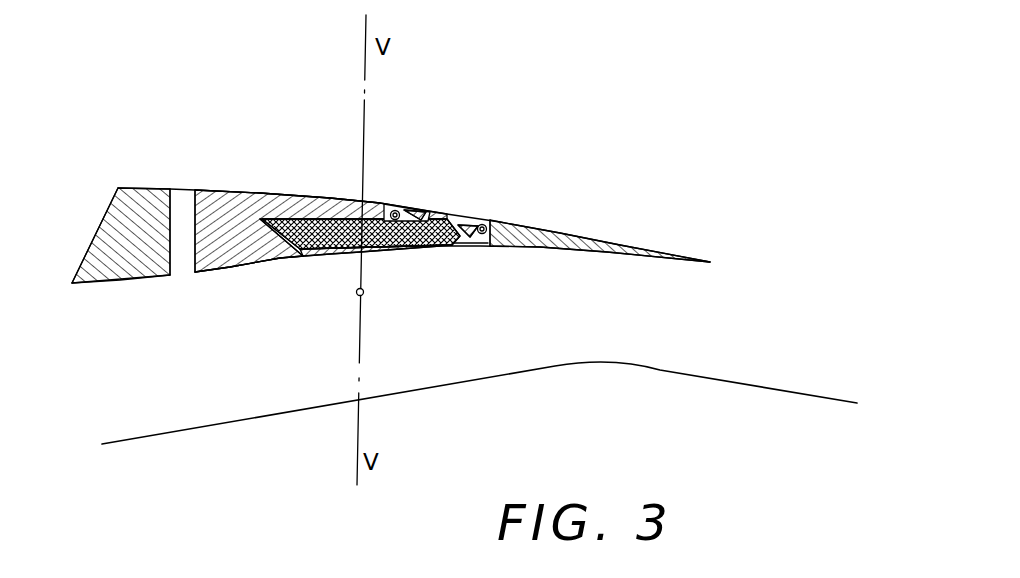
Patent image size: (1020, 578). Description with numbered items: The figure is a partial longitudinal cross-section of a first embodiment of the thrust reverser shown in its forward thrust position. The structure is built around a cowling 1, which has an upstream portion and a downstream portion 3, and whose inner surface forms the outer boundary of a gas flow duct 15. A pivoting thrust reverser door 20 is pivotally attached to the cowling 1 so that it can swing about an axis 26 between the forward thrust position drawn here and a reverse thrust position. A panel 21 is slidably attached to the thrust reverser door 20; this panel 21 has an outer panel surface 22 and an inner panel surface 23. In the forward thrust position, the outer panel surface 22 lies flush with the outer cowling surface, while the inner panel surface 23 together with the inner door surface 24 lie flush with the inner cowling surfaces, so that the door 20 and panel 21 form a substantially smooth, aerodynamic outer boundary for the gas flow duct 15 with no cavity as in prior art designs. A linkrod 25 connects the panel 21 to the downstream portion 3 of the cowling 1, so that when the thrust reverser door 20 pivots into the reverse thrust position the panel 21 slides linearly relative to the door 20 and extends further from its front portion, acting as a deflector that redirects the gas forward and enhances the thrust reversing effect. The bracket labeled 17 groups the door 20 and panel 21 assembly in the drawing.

The cowling 1 is at (118, 228).
The downstream portion 3 is at (561, 245).
The gas flow duct 15 is at (479, 396).
The connecting arrangement 17 is at (337, 95).
The thrust reverser door 20 is at (298, 232).
The panel 21 is at (249, 207).
The outer panel surface 22 is at (216, 190).
The inner panel surface 23 is at (229, 268).
The inner door surface 24 is at (390, 253).
The linkrod 25 is at (419, 209).
The axis 26 is at (356, 294).